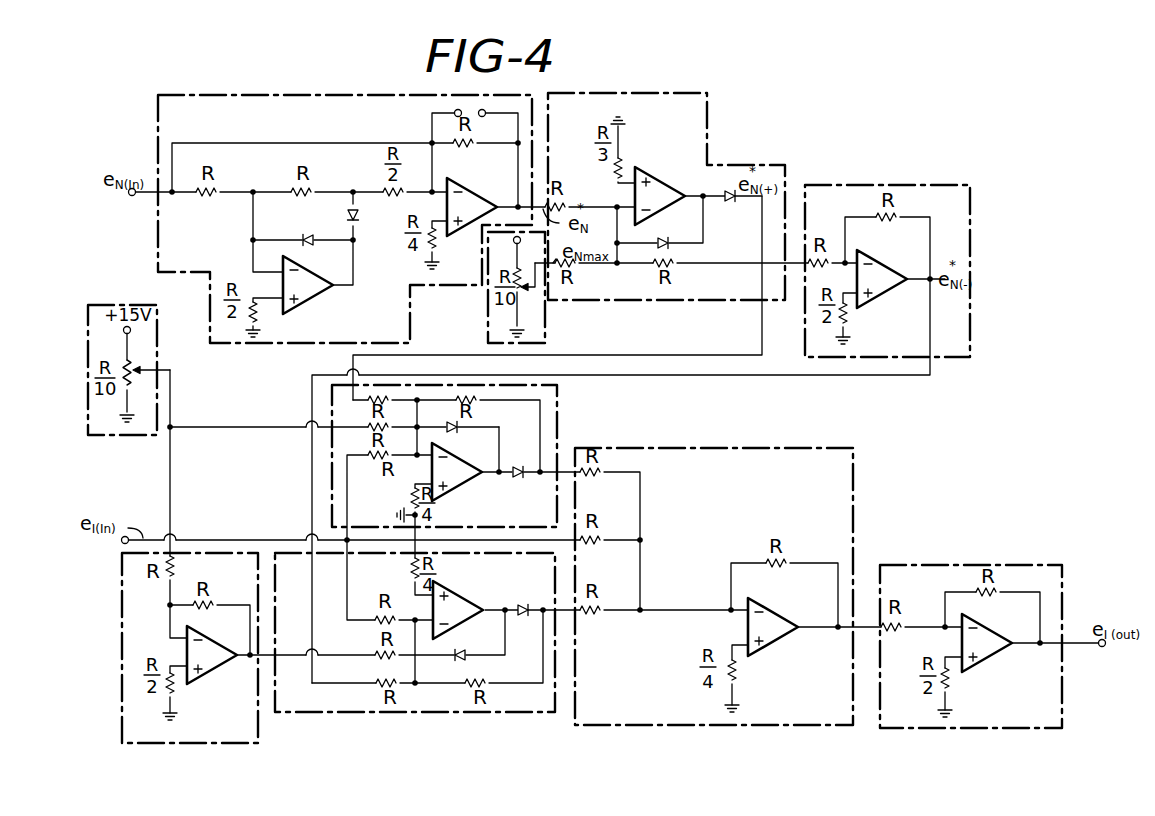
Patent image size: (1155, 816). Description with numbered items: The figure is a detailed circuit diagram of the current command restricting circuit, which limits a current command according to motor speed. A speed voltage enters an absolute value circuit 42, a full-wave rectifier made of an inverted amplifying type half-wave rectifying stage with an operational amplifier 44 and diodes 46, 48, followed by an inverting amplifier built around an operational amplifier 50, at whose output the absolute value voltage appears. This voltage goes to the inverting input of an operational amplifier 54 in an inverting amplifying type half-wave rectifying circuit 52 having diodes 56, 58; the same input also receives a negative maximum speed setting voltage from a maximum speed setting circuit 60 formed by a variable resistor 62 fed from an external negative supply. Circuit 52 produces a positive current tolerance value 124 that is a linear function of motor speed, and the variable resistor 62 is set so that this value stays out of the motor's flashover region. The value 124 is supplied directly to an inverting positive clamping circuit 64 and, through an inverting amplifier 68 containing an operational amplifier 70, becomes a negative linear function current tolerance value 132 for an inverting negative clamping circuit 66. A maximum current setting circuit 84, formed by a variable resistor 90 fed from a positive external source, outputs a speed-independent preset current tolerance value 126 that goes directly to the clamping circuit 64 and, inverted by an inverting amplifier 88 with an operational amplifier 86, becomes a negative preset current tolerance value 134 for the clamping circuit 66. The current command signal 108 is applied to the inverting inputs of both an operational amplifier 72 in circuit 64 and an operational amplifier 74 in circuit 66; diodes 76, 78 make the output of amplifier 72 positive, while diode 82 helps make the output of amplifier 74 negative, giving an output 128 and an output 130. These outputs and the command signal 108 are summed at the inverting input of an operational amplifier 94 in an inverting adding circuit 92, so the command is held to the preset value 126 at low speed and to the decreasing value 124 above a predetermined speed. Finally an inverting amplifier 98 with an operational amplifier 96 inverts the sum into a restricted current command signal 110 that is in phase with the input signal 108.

The absolute value circuit 42 is at (158, 242).
The operational amplifier 44 is at (312, 302).
The diode 46 is at (310, 246).
The diode 48 is at (359, 217).
The operational amplifier 50 is at (471, 184).
The inverting amplifying type half-wave rectifying circuit 52 is at (709, 125).
The operational amplifier 54 is at (661, 184).
The diode 56 is at (729, 203).
The diode 58 is at (670, 248).
The maximum speed setting circuit 60 is at (545, 333).
The variable resistor 62 is at (522, 292).
The inverting positive clamping circuit 64 is at (561, 439).
The inverting negative clamping circuit 66 is at (506, 714).
The inverting amplifier 68 is at (951, 360).
The operational amplifier 70 is at (889, 296).
The operational amplifier 72 is at (465, 483).
The operational amplifier 74 is at (474, 617).
The diode 76 is at (455, 433).
The diode 78 is at (518, 466).
The diode 82 is at (518, 618).
The maximum current setting circuit 84 is at (157, 412).
The operational amplifier 86 is at (215, 668).
The inverting amplifier 88 is at (258, 720).
The variable resistor 90 is at (122, 357).
The inverting adding circuit 92 is at (854, 478).
The operational amplifier 94 is at (777, 638).
The operational amplifier 96 is at (992, 661).
The inverting amplifier 98 is at (936, 563).
The current command signal 108 is at (240, 540).
The restricted current command signal 110 is at (1075, 646).
The positive current tolerance value 124 is at (762, 341).
The preset current tolerance value 126 is at (170, 387).
The output of the inverting positive clamping circuit 128 is at (539, 480).
The output of the inverting negative clamping circuit 130 is at (565, 613).
The negative linear function current tolerance value 132 is at (759, 378).
The negative preset current tolerance value 134 is at (263, 658).